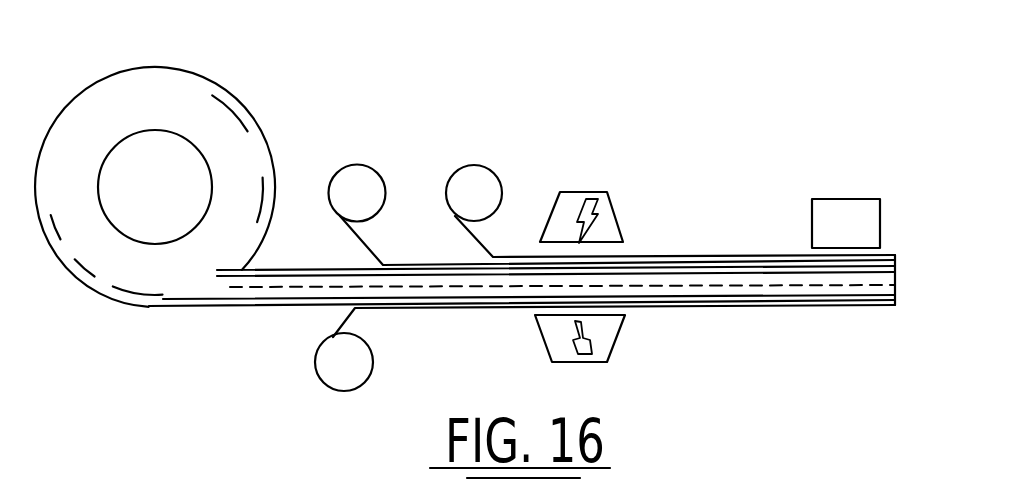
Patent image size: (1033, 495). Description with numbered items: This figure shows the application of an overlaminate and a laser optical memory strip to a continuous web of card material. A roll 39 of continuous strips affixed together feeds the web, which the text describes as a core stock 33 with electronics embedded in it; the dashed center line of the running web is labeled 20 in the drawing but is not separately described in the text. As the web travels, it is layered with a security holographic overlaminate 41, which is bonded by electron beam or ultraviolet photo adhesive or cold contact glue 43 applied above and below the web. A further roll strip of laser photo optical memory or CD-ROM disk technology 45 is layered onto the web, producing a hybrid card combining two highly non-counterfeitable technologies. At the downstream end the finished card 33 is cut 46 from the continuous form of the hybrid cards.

The web 20 is at (668, 285).
The core stock 33 is at (895, 280).
The roll 39 is at (227, 97).
The security holographic overlaminate 41 is at (373, 247).
The adhesive 43 is at (608, 200).
The laser optical memory strip 45 is at (482, 242).
The card cutting 46 is at (857, 198).